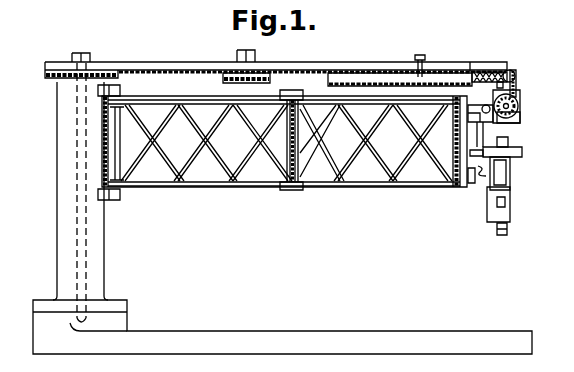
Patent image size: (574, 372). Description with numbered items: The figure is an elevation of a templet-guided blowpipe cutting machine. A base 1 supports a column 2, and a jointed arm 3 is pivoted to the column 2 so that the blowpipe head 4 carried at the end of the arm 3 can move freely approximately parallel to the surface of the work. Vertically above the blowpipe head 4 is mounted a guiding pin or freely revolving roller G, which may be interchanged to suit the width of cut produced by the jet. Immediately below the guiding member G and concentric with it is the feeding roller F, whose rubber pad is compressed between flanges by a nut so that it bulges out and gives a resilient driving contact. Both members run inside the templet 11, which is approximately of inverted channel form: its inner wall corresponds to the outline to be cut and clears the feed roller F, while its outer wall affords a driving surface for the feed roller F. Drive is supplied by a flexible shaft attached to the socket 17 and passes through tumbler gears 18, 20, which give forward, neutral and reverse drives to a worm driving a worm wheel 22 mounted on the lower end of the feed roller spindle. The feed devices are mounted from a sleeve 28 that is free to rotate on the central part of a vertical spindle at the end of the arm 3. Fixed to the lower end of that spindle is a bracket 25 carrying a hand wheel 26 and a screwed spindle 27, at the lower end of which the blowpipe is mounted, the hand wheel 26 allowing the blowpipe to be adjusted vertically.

The base 1 is at (288, 345).
The column 2 is at (92, 273).
The jointed arm 3 is at (215, 187).
The blowpipe head 4 is at (508, 230).
The templet 11 is at (467, 70).
The socket 17 is at (520, 120).
The tumbler gear 18 is at (521, 112).
The tumbler gear 20 is at (520, 97).
The worm wheel 22 is at (478, 85).
The bracket 25 is at (507, 200).
The hand wheel 26 is at (510, 170).
The screwed spindle 27 is at (522, 151).
The sleeve 28 is at (477, 122).
The feeding roller F is at (516, 76).
The guiding pin or freely revolving roller G is at (507, 67).